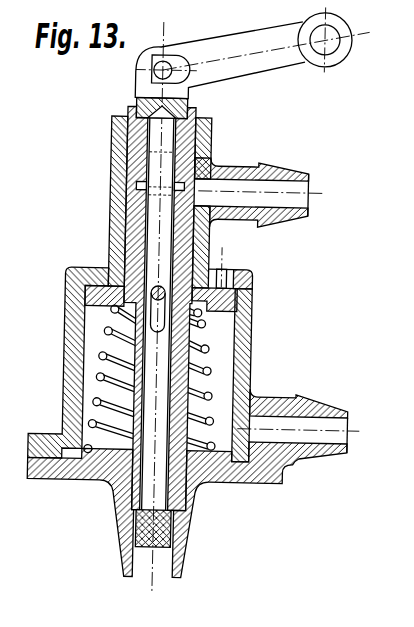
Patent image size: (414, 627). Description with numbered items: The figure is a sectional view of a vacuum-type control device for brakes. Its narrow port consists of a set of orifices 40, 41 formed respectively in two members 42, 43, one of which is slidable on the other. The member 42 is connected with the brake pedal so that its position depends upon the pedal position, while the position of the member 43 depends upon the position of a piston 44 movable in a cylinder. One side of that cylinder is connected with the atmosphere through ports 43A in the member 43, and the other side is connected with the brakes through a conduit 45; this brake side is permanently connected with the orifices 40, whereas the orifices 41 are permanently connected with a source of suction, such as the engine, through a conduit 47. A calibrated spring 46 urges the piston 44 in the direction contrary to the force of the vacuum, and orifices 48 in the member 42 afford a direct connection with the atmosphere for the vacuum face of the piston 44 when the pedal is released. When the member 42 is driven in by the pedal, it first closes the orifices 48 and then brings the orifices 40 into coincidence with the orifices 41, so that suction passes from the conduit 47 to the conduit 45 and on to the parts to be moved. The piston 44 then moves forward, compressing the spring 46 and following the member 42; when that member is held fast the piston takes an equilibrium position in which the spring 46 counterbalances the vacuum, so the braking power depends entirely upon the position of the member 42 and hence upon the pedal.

The orifices 40 is at (130, 182).
The orifices 41 is at (130, 190).
The member 42 is at (251, 335).
The member 43 is at (221, 258).
The ports 43A is at (232, 276).
The piston 44 is at (234, 358).
The conduit 45 is at (322, 406).
The calibrated spring 46 is at (234, 394).
The conduit 47 is at (274, 170).
The orifices 48 is at (196, 130).